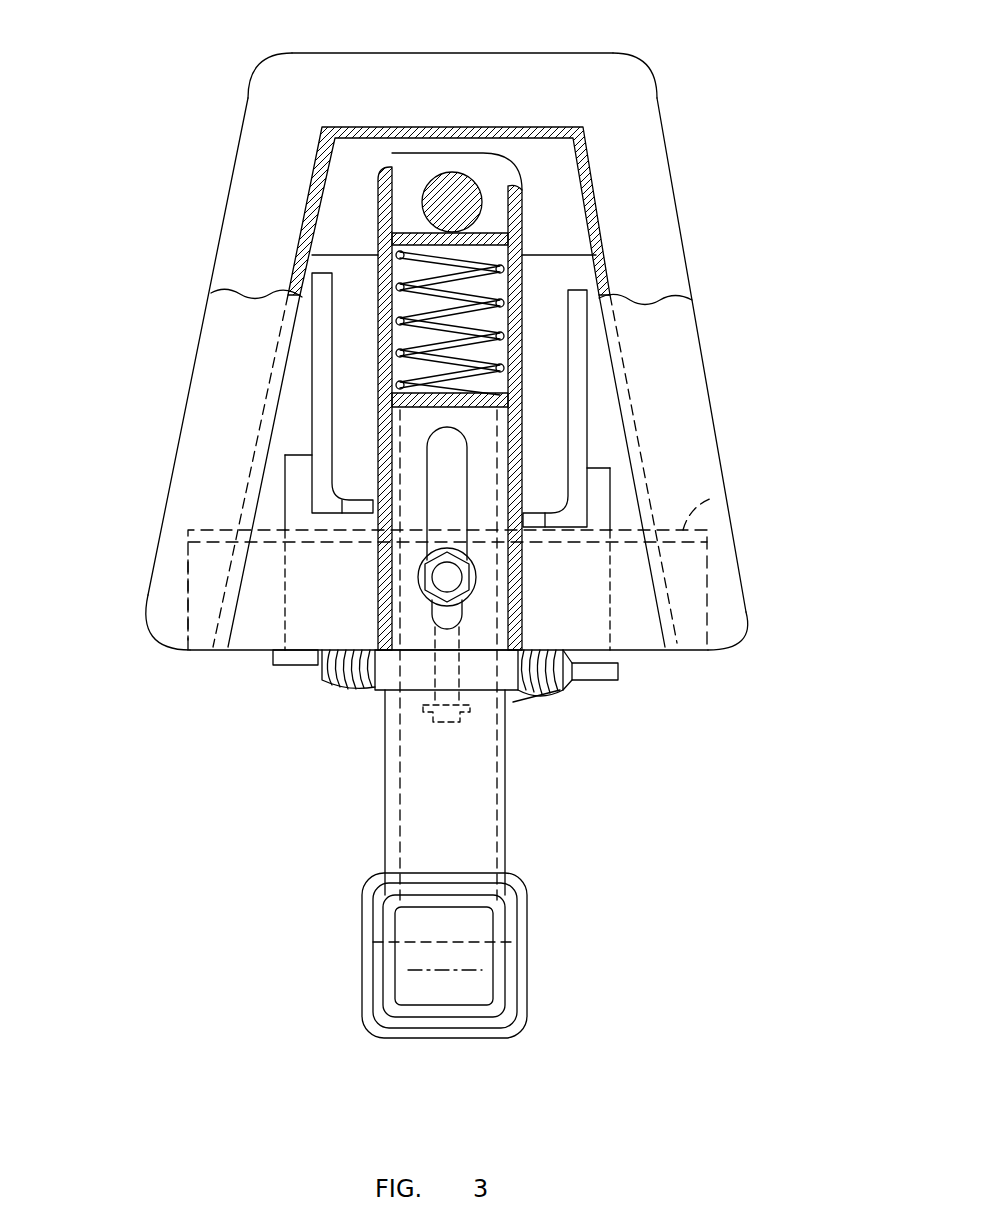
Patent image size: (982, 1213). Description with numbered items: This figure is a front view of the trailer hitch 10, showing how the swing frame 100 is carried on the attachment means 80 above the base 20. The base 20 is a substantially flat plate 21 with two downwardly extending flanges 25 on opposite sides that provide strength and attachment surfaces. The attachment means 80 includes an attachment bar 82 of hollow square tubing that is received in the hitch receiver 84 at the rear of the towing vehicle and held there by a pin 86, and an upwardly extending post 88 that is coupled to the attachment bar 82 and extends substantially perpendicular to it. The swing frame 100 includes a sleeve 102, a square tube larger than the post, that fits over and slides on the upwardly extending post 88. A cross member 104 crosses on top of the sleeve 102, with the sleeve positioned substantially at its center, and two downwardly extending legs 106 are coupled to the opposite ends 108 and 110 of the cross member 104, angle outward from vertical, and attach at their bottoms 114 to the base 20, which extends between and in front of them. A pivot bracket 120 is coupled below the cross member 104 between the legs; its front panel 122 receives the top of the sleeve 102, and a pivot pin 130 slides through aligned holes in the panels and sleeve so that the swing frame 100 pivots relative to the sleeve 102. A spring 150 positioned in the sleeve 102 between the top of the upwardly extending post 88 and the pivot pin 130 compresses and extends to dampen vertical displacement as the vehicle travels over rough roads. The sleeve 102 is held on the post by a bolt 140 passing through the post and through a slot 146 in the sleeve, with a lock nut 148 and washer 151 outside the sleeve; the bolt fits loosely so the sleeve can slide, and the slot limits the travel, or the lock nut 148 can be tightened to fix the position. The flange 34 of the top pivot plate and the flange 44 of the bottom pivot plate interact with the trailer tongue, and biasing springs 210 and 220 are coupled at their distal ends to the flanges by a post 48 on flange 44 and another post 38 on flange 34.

The trailer hitch 10 is at (122, 90).
The base 20 is at (717, 597).
The flat plate 21 is at (715, 497).
The downwardly extending flange 25 is at (205, 587).
The flange 34 is at (318, 388).
The post 38 is at (595, 680).
The flange 44 is at (582, 373).
The post 48 is at (283, 668).
The attachment means 80 is at (617, 919).
The attachment bar 82 is at (498, 1005).
The hitch receiver 84 is at (527, 890).
The pin 86 is at (400, 977).
The upwardly extending post 88 is at (505, 835).
The swing frame 100 is at (775, 167).
The sleeve 102 is at (410, 693).
The cross member 104 is at (475, 58).
The downwardly extending leg 106 is at (690, 408).
The end of cross member 108 is at (283, 83).
The end of cross member 110 is at (625, 77).
The bottom of downwardly extending leg 114 is at (160, 640).
The pivot bracket 120 is at (552, 157).
The front panel 122 is at (366, 247).
The pivot pin 130 is at (440, 197).
The bolt 140 is at (435, 580).
The slot 146 is at (440, 495).
The lock nut 148 is at (472, 590).
The spring 150 is at (497, 275).
The washer 151 is at (465, 576).
The spring 210 is at (543, 695).
The spring 220 is at (340, 690).